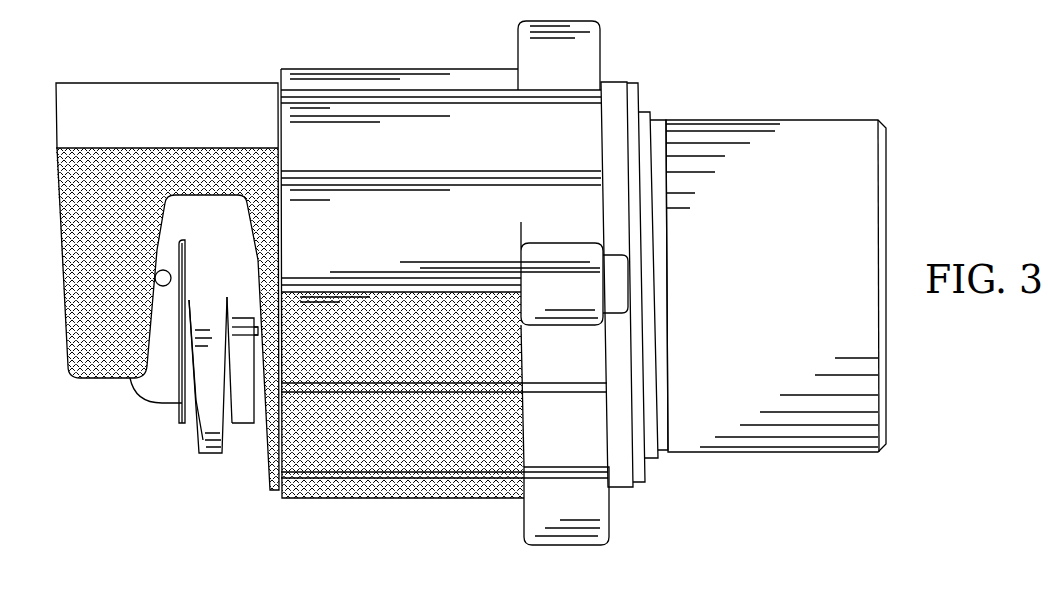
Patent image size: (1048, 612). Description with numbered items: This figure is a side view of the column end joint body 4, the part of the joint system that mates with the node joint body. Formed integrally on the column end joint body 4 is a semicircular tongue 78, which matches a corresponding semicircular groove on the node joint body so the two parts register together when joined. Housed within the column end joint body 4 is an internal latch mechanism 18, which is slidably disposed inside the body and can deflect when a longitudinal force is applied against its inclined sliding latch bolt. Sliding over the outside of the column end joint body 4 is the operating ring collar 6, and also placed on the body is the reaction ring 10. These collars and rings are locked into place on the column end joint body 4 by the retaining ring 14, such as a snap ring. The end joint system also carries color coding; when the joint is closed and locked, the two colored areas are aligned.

The column end joint body 4 is at (174, 83).
The operating ring collar 6 is at (402, 69).
The reaction ring 10 is at (613, 82).
The retaining ring 14 is at (641, 90).
The internal latch mechanism 18 is at (162, 390).
The integral semicircular tongue 78 is at (208, 455).